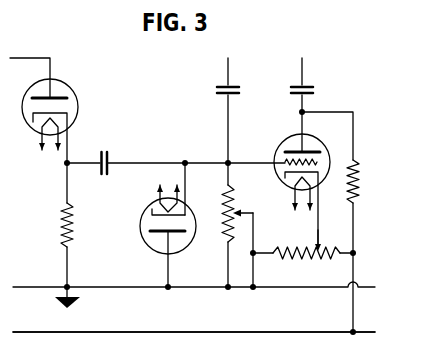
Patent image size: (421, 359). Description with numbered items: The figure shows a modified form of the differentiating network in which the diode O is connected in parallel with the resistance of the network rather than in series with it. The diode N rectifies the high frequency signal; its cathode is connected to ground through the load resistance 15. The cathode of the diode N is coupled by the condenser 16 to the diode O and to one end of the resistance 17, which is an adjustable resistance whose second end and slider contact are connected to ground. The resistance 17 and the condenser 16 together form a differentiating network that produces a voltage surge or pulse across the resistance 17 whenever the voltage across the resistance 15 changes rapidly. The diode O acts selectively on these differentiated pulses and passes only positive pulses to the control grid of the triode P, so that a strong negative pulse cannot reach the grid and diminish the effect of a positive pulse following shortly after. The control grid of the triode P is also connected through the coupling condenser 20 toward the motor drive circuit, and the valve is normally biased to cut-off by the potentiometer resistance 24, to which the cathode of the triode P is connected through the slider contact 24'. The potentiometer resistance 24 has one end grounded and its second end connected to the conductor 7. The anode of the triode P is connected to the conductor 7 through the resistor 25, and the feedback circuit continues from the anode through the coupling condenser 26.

The diode N is at (63, 82).
The condenser 16 is at (104, 152).
The load resistance 15 is at (62, 212).
The diode O is at (140, 224).
The resistance 17 is at (222, 206).
The coupling condenser 20 is at (215, 93).
The coupling condenser 26 is at (314, 92).
The triode P is at (284, 142).
The resistor 25 is at (350, 192).
The potentiometer resistance 24 is at (306, 243).
The slider contact 24' is at (331, 238).
The conductor 7 is at (200, 331).